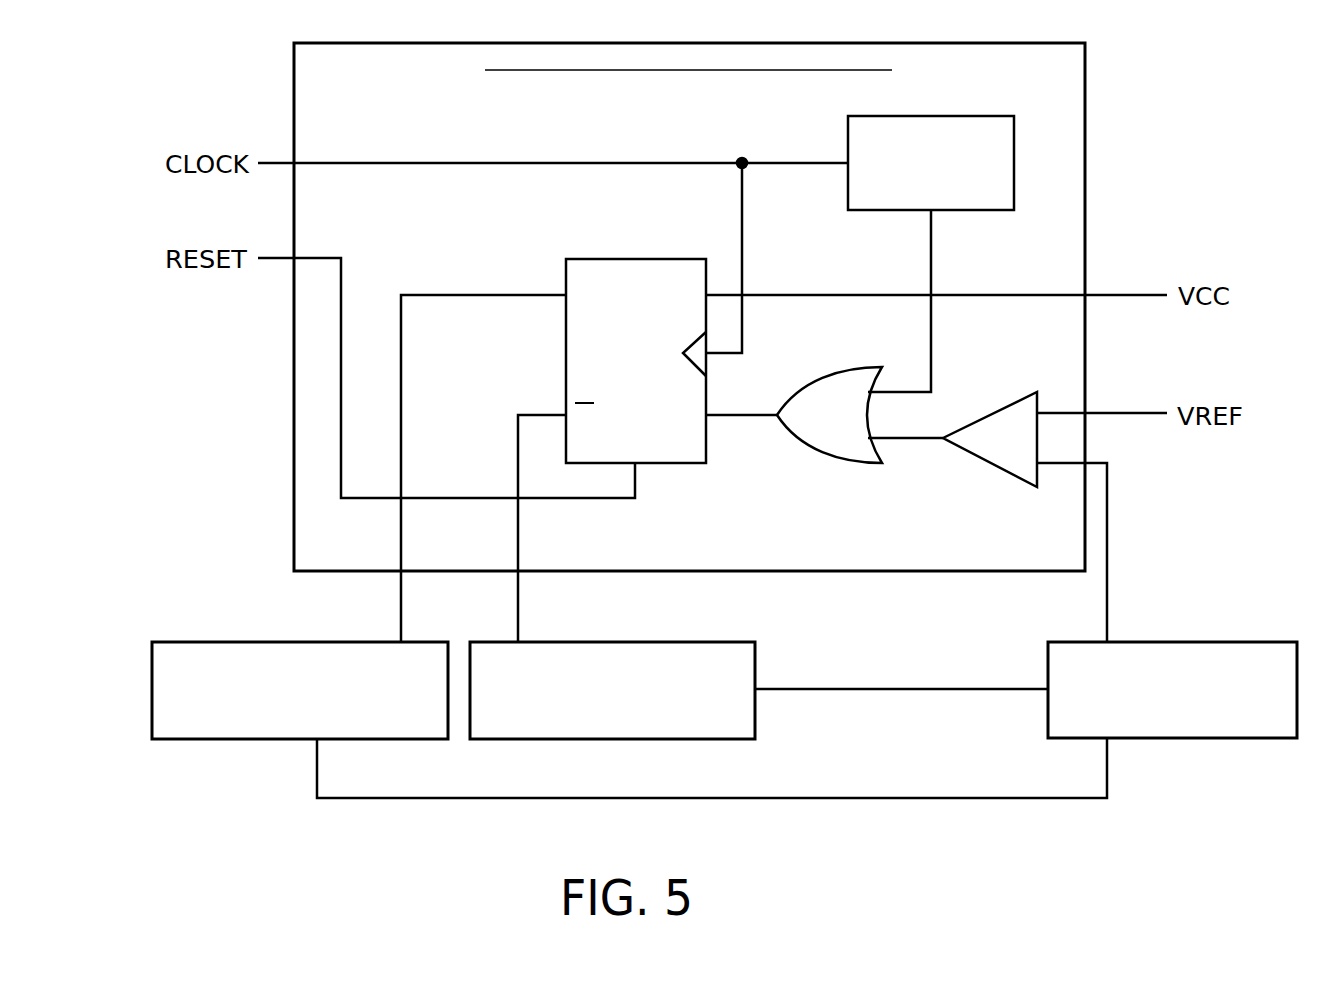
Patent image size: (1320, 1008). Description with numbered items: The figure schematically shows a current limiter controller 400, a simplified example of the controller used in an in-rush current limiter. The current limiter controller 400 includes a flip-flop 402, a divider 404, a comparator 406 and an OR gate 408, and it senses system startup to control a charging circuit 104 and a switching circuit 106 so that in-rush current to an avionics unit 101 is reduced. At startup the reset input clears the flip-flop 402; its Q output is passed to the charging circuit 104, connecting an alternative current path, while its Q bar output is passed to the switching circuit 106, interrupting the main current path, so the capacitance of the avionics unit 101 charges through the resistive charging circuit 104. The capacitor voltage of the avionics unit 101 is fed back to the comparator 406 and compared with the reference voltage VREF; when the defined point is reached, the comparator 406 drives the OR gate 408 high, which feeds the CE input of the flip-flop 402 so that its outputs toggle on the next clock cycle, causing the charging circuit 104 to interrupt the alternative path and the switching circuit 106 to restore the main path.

The current limiter controller 400 is at (908, 43).
The flip-flop 402 is at (612, 259).
The divider 404 is at (935, 116).
The comparator 406 is at (1022, 452).
The OR gate 408 is at (845, 427).
The avionics unit 101 is at (1140, 642).
The charging circuit 104 is at (215, 642).
The switching circuit 106 is at (637, 642).